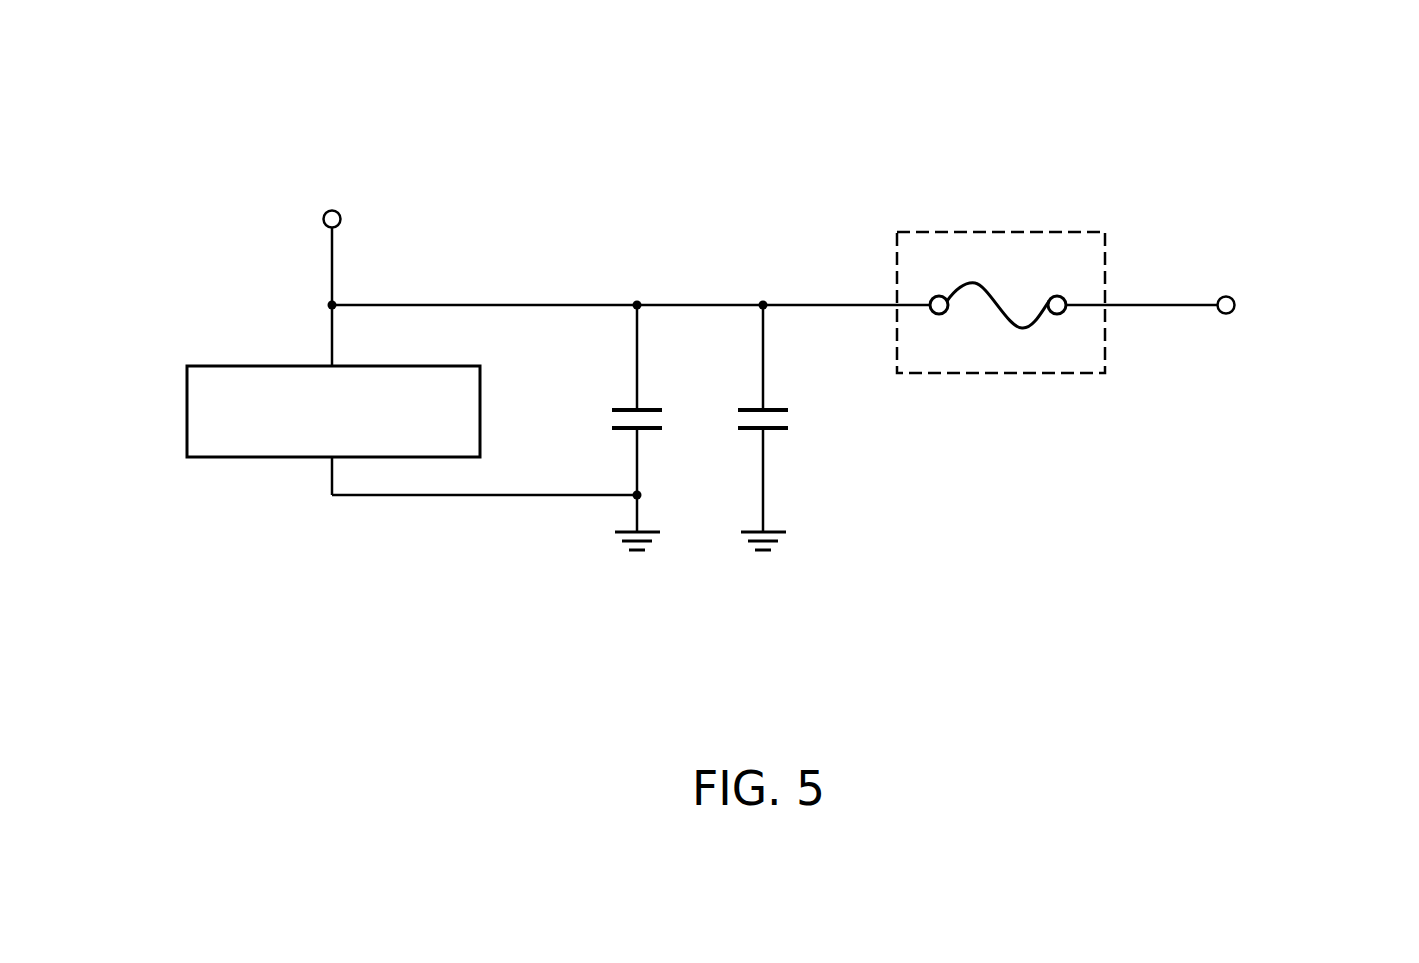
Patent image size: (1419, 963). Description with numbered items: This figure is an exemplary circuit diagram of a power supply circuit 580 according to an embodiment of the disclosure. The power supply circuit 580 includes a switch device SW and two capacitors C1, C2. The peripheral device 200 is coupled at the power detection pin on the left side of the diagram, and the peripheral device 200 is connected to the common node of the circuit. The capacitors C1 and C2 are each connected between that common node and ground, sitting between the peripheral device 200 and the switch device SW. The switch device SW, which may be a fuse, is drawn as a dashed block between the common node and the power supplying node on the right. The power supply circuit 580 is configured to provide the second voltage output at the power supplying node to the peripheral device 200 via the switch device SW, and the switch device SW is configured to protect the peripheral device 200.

The power supply circuit 580 is at (167, 57).
The peripheral device 200 is at (187, 410).
The capacitor C1 is at (650, 398).
The capacitor C2 is at (776, 398).
The switch device SW is at (1013, 231).